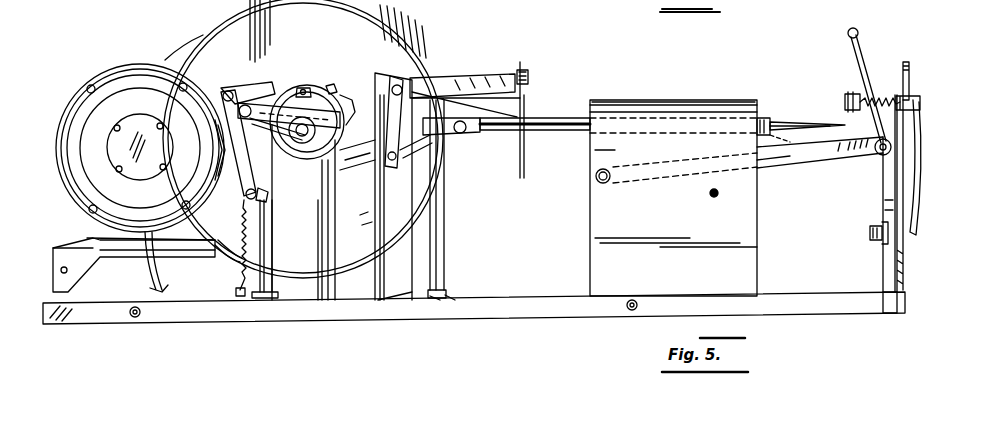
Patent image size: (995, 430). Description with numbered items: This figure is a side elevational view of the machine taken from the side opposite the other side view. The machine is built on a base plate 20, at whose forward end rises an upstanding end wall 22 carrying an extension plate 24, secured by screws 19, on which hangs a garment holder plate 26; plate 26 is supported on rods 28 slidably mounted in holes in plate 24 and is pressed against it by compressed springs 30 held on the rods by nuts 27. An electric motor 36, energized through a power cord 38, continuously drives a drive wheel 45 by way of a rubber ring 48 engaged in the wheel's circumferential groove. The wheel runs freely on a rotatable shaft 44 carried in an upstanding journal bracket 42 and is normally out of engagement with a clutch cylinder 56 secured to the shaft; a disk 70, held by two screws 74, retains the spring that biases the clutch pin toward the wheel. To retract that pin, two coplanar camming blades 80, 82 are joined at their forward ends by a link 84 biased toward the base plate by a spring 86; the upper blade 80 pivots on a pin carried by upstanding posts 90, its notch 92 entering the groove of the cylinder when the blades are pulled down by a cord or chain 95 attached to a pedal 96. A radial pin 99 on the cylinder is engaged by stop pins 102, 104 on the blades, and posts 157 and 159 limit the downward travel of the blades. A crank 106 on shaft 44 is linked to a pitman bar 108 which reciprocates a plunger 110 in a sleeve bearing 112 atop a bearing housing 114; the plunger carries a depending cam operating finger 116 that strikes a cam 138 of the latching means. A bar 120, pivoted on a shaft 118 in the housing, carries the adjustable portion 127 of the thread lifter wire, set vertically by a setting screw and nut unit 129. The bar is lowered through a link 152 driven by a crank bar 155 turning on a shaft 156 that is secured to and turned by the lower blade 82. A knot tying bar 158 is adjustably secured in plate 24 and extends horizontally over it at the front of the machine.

The screws 19 is at (874, 228).
The base plate 20 is at (235, 312).
The upstanding end wall 22 is at (890, 285).
The extension plate 24 is at (903, 242).
The garment holder plate 26 is at (918, 156).
The nuts 27 is at (848, 100).
The rods 28 is at (920, 108).
The compressed springs 30 is at (878, 96).
The electric motor 36 is at (112, 88).
The power cord 38 is at (150, 262).
The journal bracket 42 is at (295, 288).
The rotatable shaft 44 is at (302, 142).
The drive wheel 45 is at (228, 25).
The rubber ring 48 is at (197, 44).
The clutch cylinder 56 is at (347, 166).
The disk 70 is at (303, 86).
The screws 74 is at (290, 86).
The upper camming blade 80 is at (368, 76).
The lower camming blade 82 is at (372, 162).
The link 84 is at (268, 166).
The spring 86 is at (238, 270).
The upstanding posts 90 is at (385, 290).
The notch 92 is at (260, 76).
The cord or chain 95 is at (518, 152).
The pedal 96 is at (523, 68).
The pin 99 is at (332, 84).
The stop pin 102 is at (347, 112).
The stop pin 104 is at (262, 196).
The crank 106 is at (220, 132).
The pitman bar 108 is at (455, 138).
The plunger 110 is at (557, 116).
The sleeve bearing 112 is at (706, 100).
The bearing housing 114 is at (680, 100).
The cam operating finger 116 is at (766, 128).
The shaft 118 is at (596, 178).
The bar 120 is at (823, 153).
The adjustable portion of thread lifter wire 127 is at (862, 46).
The setting screw and nut unit 129 is at (878, 155).
The cam 138 is at (790, 142).
The link 152 is at (465, 76).
The crank bar 155 is at (378, 70).
The shaft 156 is at (400, 162).
The post 157 is at (447, 240).
The knot tying bar 158 is at (912, 76).
The post 159 is at (278, 285).